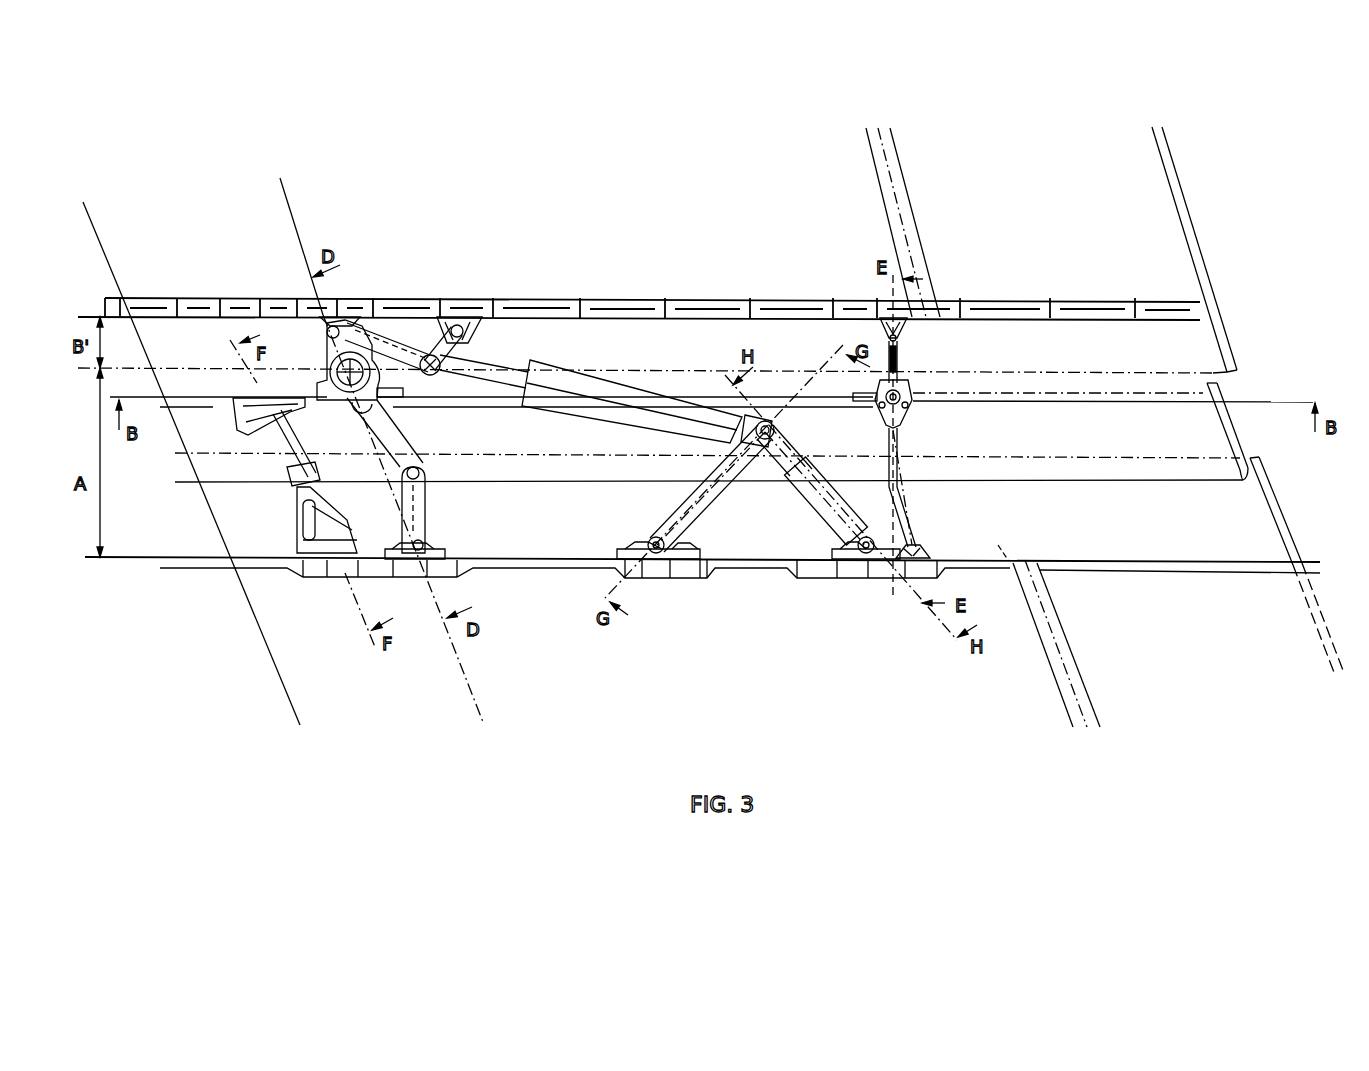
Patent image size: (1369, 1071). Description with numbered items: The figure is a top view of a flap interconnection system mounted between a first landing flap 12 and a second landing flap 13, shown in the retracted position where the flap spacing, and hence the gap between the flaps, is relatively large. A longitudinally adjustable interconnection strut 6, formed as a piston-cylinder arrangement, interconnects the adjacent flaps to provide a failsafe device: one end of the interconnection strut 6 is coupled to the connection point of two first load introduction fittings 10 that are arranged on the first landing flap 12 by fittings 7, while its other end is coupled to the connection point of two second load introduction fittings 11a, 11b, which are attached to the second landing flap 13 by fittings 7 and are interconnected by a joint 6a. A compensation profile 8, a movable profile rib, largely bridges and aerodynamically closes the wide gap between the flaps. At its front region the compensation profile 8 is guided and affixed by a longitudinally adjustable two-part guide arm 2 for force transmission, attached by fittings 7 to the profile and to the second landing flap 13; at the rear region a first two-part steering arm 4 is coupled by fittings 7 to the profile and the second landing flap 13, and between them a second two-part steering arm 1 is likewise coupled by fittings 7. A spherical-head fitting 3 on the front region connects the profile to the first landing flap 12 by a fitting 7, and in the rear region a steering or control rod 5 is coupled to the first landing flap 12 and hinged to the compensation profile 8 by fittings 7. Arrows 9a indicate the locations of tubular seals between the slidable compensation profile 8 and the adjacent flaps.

The second longitudinally adjustable two-part steering arm 1 is at (437, 507).
The longitudinally adjustable two-part guide arm 2 is at (350, 528).
The spherical-head fitting 3 is at (325, 330).
The first longitudinally adjustable two-part steering arm 4 is at (905, 510).
The steering or control rod 5 is at (890, 377).
The longitudinally adjustable interconnection strut 6 is at (618, 385).
The joint 6a is at (765, 420).
The fitting 7 is at (353, 323).
The compensation profile 8 is at (1126, 442).
The arrows indicating locations of tubular seals 9a is at (1196, 382).
The first load introduction fitting 10 is at (465, 320).
The second load introduction fitting 11a is at (815, 550).
The second load introduction fitting 11b is at (710, 550).
The first landing flap 12 is at (1090, 207).
The second landing flap 13 is at (1228, 645).